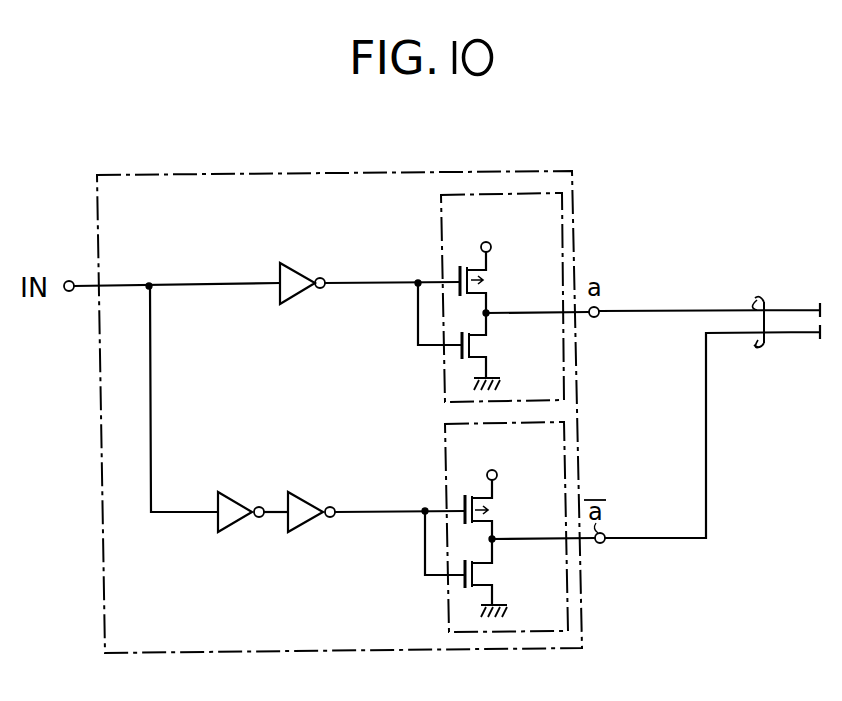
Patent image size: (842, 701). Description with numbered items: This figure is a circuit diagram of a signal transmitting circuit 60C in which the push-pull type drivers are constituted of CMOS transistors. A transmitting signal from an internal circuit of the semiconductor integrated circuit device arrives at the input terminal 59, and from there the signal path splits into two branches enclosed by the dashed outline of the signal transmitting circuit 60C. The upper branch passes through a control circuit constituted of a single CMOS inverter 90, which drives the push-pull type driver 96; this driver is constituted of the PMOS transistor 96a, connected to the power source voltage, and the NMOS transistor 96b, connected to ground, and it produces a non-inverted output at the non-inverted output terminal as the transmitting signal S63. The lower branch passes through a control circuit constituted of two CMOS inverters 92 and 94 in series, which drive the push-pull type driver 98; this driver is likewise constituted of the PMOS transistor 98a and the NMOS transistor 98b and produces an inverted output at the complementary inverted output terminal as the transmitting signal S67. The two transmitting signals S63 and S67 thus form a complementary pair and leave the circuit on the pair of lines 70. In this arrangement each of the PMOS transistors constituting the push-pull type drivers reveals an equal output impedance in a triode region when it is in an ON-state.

The input terminal 59 is at (64, 280).
The signal transmitting circuit 60C is at (523, 168).
The signal line pair 70 is at (764, 300).
The CMOS inverter 90 is at (306, 277).
The CMOS inverter 92 is at (241, 494).
The CMOS inverter 94 is at (317, 494).
The push-pull type driver 96 is at (544, 286).
The PMOS transistor 96a is at (502, 282).
The NMOS transistor 96b is at (477, 347).
The push-pull type driver 98 is at (541, 528).
The PMOS transistor 98a is at (507, 509).
The NMOS transistor 98b is at (482, 573).
The transmitting signal S63 is at (662, 308).
The transmitting signal S67 is at (672, 537).